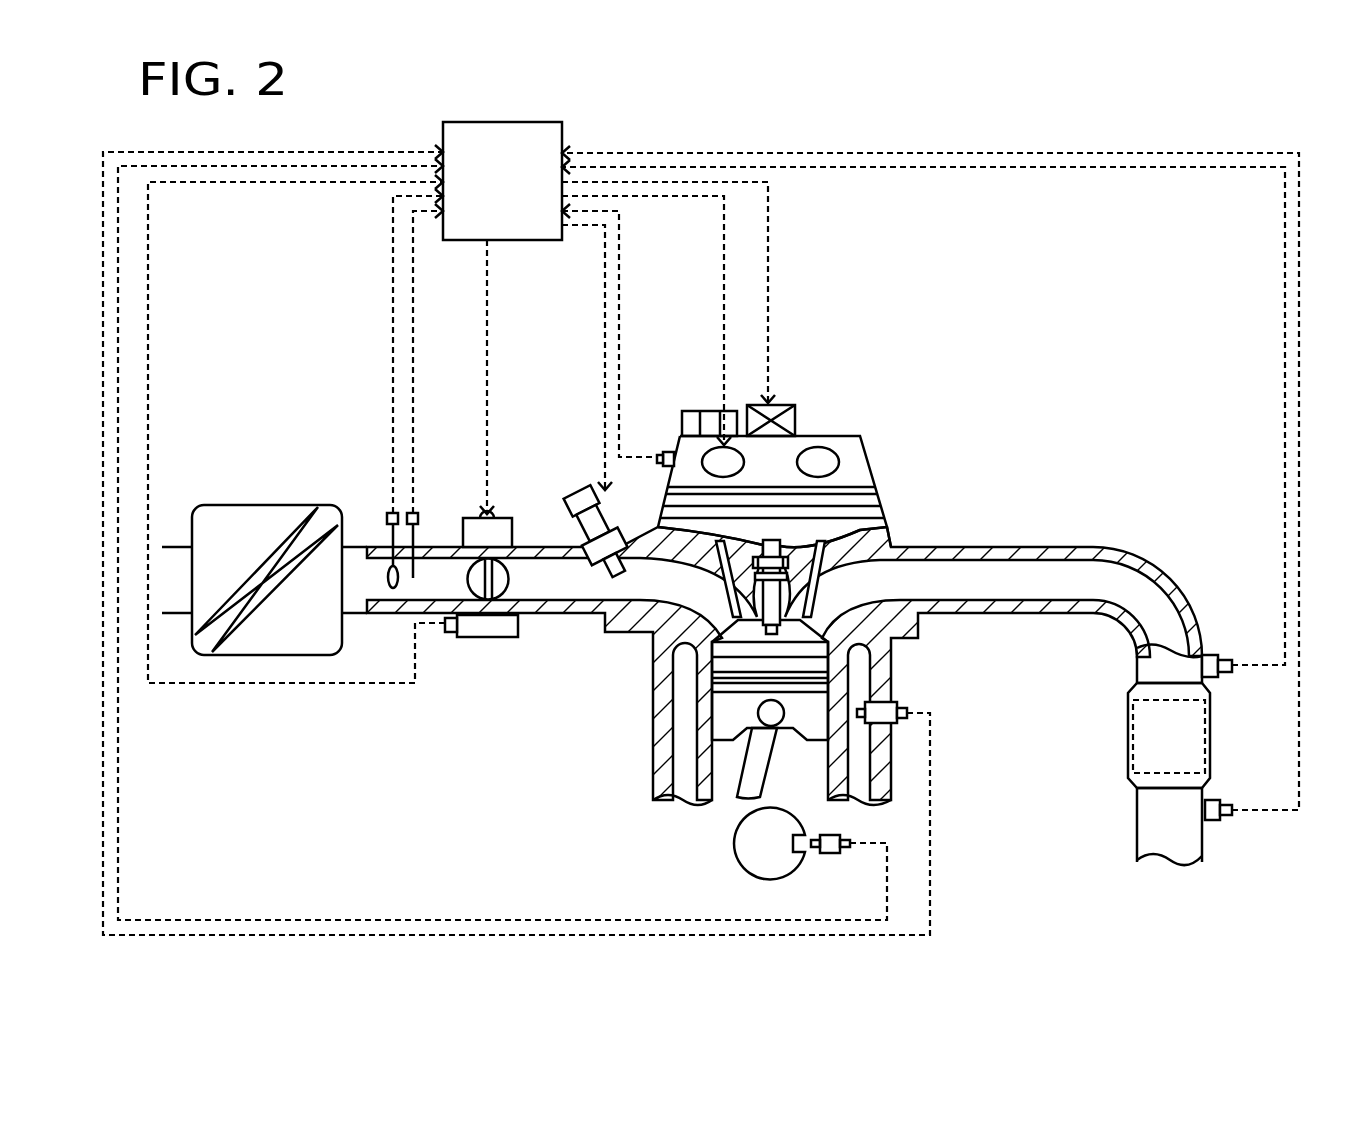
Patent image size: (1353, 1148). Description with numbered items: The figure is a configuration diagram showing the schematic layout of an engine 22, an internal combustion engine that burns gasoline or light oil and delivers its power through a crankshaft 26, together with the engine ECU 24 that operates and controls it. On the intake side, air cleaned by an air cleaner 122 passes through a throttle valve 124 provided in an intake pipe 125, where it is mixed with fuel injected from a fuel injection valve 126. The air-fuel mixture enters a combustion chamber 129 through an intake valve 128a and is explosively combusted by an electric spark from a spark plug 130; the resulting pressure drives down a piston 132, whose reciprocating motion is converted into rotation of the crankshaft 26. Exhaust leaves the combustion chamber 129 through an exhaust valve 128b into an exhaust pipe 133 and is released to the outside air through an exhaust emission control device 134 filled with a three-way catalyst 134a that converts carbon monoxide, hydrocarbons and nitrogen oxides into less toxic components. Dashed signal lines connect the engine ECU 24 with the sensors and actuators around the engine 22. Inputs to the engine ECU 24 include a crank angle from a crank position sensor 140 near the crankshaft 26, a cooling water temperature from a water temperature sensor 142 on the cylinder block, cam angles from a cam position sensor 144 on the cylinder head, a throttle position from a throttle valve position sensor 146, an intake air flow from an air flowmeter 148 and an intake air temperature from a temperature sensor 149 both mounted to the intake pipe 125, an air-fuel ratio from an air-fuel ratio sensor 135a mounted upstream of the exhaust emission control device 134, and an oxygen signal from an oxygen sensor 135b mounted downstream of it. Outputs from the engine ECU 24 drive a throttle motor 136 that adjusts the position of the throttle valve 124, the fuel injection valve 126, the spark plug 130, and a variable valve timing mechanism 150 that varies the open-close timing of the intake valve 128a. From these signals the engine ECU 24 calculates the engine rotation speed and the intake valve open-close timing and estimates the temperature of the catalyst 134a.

The engine 22 is at (878, 351).
The engine ECU 24 is at (530, 122).
The crankshaft 26 is at (735, 841).
The air cleaner 122 is at (268, 505).
The throttle valve 124 is at (505, 568).
The intake pipe 125 is at (572, 605).
The fuel injection valve 126 is at (572, 492).
The intake valve 128a is at (735, 614).
The exhaust valve 128b is at (812, 617).
The combustion chamber 129 is at (797, 635).
The spark plug 130 is at (790, 596).
The piston 132 is at (730, 712).
The exhaust pipe 133 is at (950, 548).
The exhaust emission control device 134 is at (1128, 728).
The catalyst 134a is at (1133, 755).
The air-fuel ratio sensor 135a is at (1208, 655).
The oxygen sensor 135b is at (1208, 822).
The throttle motor 136 is at (473, 518).
The crank position sensor 140 is at (832, 853).
The water temperature sensor 142 is at (893, 703).
The cam position sensor 144 is at (669, 452).
The throttle valve position sensor 146 is at (487, 637).
The air flowmeter 148 is at (387, 518).
The temperature sensor 149 is at (443, 500).
The variable valve timing mechanism 150 is at (716, 450).